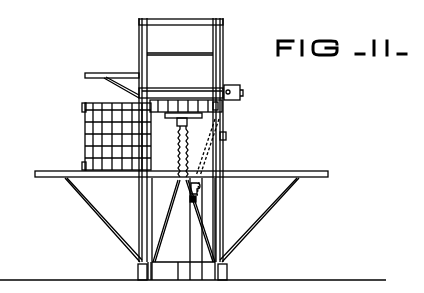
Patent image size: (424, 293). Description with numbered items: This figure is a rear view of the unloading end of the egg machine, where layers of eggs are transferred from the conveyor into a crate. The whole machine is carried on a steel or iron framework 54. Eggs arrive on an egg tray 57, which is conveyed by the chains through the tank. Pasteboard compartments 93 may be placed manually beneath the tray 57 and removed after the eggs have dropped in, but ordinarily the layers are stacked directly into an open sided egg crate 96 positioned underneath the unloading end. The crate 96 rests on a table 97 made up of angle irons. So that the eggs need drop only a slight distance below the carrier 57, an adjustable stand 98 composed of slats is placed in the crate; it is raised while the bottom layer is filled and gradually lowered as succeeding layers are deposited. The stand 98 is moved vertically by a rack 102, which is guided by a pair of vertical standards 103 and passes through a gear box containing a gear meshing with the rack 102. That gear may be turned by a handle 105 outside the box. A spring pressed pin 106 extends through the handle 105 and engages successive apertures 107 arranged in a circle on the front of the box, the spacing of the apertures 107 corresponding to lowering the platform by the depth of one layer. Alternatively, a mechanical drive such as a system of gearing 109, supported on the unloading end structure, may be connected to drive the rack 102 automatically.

The framework 54 is at (228, 268).
The egg tray 57 is at (206, 89).
The pasteboard compartments 93 is at (219, 114).
The egg crate 96 is at (226, 136).
The table 97 is at (275, 171).
The stand 98 is at (217, 124).
The rack 102 is at (215, 149).
The vertical standards 103 is at (183, 212).
The handle 105 is at (191, 188).
The spring pressed pin 106 is at (197, 198).
The apertures 107 is at (200, 186).
The system of gearing 109 is at (230, 103).